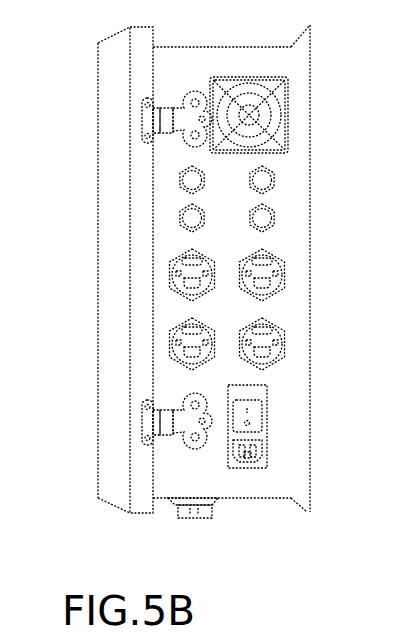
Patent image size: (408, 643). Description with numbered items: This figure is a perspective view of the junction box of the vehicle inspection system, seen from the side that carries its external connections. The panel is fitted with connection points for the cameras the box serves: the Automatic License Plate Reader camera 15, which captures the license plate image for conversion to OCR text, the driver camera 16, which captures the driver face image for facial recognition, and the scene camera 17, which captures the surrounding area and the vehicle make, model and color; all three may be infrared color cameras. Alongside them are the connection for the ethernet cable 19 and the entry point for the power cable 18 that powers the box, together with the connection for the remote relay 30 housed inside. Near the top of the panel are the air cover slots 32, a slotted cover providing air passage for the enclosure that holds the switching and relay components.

The ALPR camera 15 is at (170, 262).
The driver camera 16 is at (283, 262).
The scene camera 17 is at (283, 333).
The power cable 18 is at (262, 430).
The ethernet cable 19 is at (170, 333).
The remote relay 30 is at (276, 174).
The air cover slots 32 is at (288, 80).